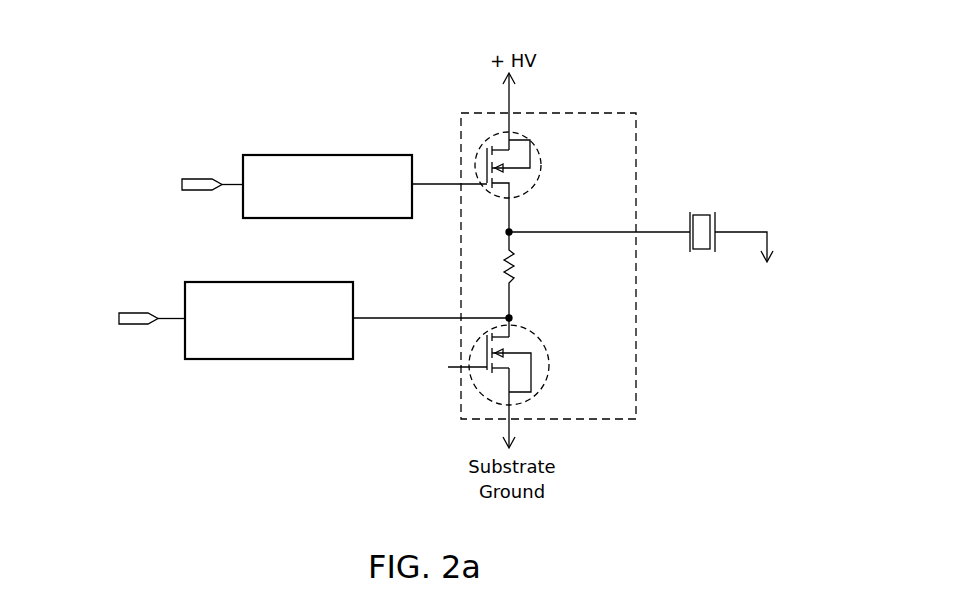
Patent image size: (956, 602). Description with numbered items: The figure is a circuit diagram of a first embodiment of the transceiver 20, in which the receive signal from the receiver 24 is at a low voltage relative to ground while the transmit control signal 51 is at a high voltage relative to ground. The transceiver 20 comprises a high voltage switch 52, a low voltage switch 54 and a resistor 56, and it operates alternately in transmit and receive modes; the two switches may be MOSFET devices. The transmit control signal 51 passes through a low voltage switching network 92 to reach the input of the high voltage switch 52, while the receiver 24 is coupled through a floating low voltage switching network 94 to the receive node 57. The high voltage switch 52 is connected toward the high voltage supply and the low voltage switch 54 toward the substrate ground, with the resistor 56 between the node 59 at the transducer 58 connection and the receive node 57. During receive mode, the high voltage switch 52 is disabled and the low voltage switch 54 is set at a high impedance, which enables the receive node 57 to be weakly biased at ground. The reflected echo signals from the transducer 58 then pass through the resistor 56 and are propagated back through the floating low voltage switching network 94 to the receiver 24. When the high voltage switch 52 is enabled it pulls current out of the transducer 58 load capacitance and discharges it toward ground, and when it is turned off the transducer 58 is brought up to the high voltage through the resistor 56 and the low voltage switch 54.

The transceiver 20 is at (703, 43).
The receiver 24 is at (135, 326).
The transmit control signal 51 is at (192, 178).
The high voltage switch 52 is at (483, 142).
The low voltage switch 54 is at (478, 395).
The resistor 56 is at (513, 268).
The receive node 57 is at (512, 318).
The transducer 58 is at (701, 213).
The node 59 is at (506, 233).
The low voltage switching network 92 is at (322, 155).
The floating low voltage switching network 94 is at (260, 360).